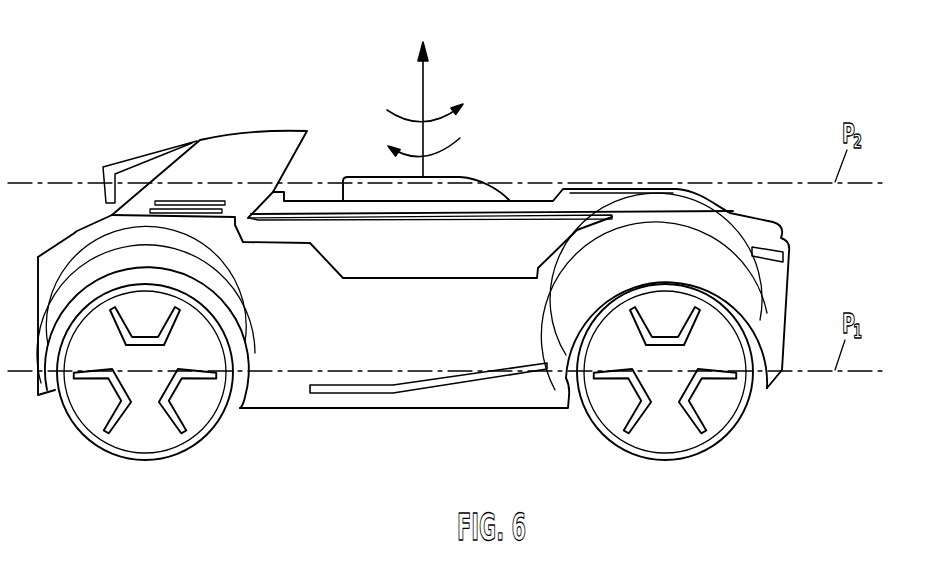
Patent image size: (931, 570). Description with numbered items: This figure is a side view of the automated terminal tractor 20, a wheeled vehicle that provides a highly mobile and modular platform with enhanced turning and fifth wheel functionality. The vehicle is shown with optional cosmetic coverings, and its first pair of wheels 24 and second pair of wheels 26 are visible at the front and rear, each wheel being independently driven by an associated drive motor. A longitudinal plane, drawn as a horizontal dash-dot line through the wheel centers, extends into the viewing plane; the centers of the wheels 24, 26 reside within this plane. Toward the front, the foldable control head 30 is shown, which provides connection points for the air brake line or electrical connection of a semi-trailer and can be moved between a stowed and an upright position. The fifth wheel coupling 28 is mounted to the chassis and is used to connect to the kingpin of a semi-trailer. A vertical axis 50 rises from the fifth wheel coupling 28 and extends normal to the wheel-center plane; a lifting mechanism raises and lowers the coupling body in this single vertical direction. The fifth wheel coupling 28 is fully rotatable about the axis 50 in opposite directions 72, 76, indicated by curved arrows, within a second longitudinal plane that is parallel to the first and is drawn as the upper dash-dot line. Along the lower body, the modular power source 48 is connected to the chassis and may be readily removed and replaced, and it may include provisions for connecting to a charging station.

The terminal tractor 20 is at (70, 172).
The first pair of wheels 24 is at (93, 417).
The second pair of wheels 26 is at (640, 428).
The fifth wheel coupling 28 is at (485, 182).
The control head 30 is at (237, 148).
The power source 48 is at (352, 408).
The axis 50 is at (427, 75).
The direction 72 is at (458, 139).
The direction 76 is at (466, 111).